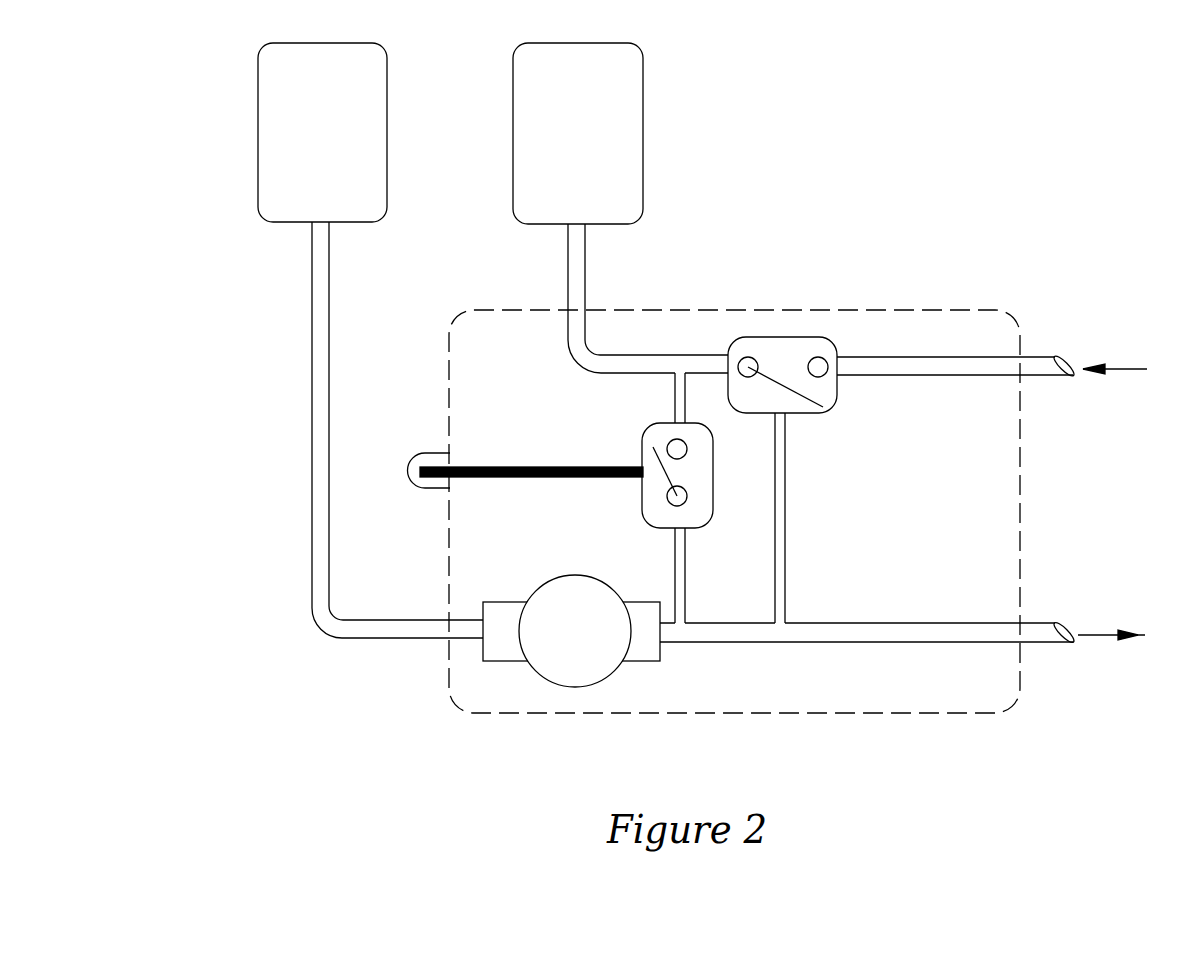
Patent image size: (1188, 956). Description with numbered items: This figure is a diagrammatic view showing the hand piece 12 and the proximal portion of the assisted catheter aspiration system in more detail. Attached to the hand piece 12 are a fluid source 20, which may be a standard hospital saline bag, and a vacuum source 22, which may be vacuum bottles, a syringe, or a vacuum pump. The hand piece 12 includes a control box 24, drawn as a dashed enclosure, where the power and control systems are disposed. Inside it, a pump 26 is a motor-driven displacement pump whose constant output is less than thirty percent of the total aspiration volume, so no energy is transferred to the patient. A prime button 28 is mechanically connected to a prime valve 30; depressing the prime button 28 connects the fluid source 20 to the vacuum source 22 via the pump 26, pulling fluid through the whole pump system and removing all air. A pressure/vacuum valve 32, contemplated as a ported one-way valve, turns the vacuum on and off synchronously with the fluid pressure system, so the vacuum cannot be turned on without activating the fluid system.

The hand piece 12 is at (983, 173).
The fluid source 20 is at (268, 133).
The vacuum source 22 is at (631, 136).
The control box 24 is at (783, 697).
The pump 26 is at (503, 648).
The prime button 28 is at (408, 470).
The prime valve 30 is at (656, 431).
The pressure/vacuum valve 32 is at (825, 405).